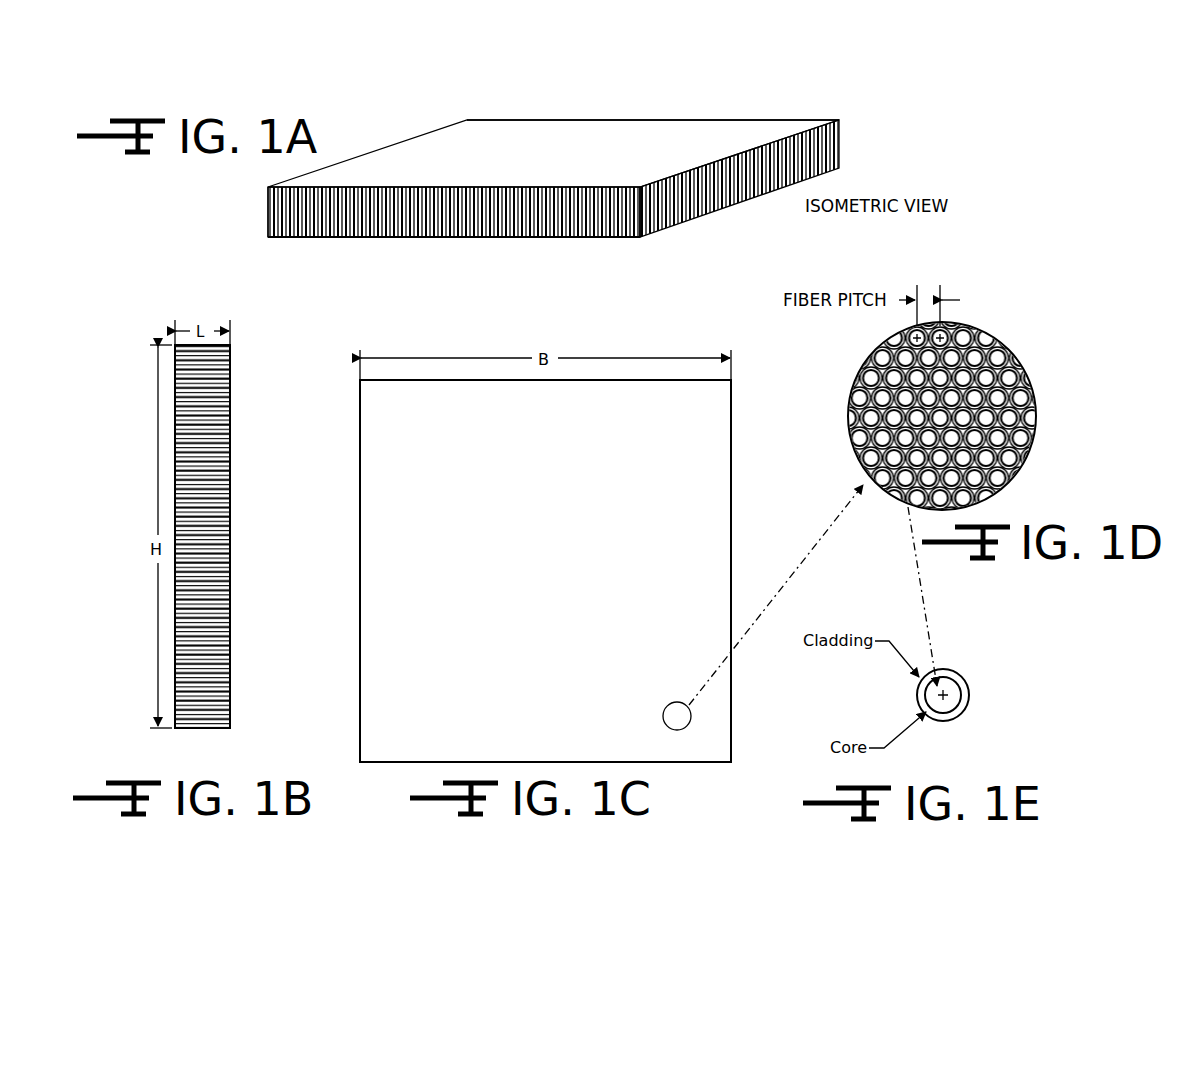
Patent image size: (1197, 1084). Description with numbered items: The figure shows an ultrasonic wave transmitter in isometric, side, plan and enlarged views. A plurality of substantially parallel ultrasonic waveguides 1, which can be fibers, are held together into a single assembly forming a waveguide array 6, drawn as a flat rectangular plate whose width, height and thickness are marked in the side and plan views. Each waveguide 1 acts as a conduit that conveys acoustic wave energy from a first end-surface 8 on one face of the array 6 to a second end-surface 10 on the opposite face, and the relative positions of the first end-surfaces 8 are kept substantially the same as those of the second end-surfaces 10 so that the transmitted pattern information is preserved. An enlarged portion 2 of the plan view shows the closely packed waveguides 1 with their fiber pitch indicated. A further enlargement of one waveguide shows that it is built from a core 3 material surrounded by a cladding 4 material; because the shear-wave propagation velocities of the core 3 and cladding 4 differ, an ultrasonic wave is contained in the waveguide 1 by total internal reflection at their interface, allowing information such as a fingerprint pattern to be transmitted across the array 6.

In FIG. 1A, the ultrasonic waveguide 1 is at (412, 201).
In FIG. 1C, the ultrasonic waveguide 1 is at (456, 437).
In FIG. 1D, the fiber bundle cross-section 2 is at (963, 321).
In FIG. 1E, the core 3 is at (949, 688).
In FIG. 1E, the cladding 4 is at (954, 722).
In FIG. 1A, the waveguide array 6 is at (583, 99).
In FIG. 1B, the waveguide array 6 is at (204, 735).
In FIG. 1C, the waveguide array 6 is at (694, 771).
In FIG. 1A, the first end-surface 8 is at (636, 132).
In FIG. 1B, the first end-surface 8 is at (233, 719).
In FIG. 1A, the second end-surface 10 is at (552, 239).
In FIG. 1B, the second end-surface 10 is at (174, 658).